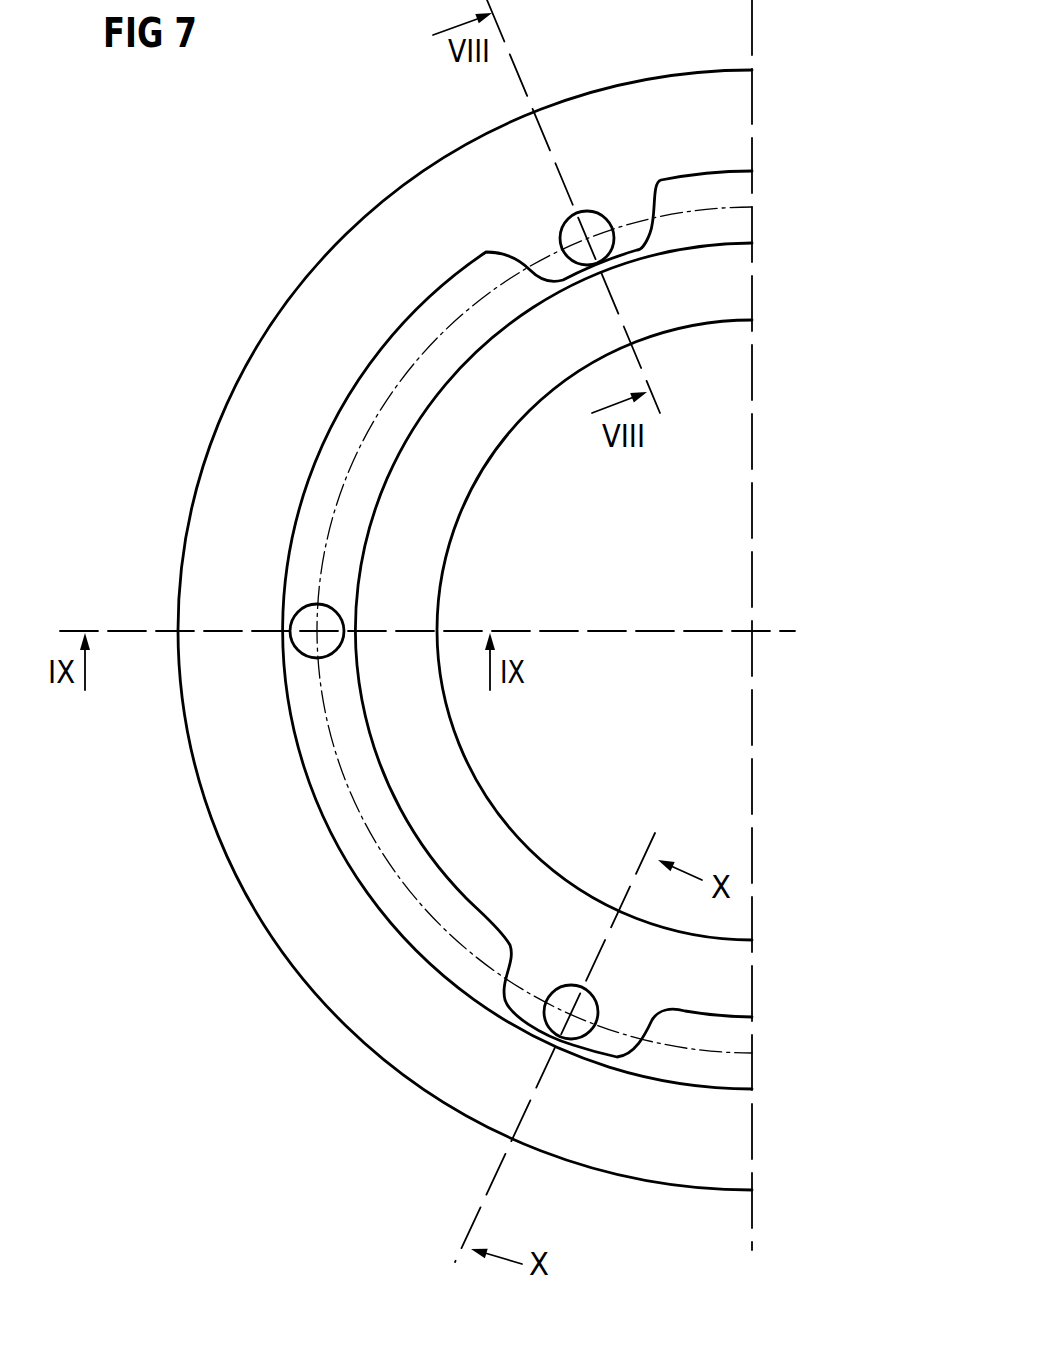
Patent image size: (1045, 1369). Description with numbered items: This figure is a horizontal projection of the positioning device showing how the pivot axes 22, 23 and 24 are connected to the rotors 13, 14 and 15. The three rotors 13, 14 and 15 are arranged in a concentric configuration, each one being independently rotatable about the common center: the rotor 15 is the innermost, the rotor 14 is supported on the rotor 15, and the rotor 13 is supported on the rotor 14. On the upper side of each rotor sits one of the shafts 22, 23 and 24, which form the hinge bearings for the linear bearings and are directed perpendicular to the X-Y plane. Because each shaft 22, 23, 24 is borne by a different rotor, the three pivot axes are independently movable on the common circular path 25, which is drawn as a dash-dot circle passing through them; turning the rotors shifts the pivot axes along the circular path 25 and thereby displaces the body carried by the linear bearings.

The rotor 13 is at (437, 630).
The rotor 14 is at (419, 630).
The rotor 15 is at (433, 650).
The shaft 22 is at (474, 162).
The shaft 23 is at (213, 592).
The shaft 24 is at (399, 1033).
The circular path 25 is at (506, 589).